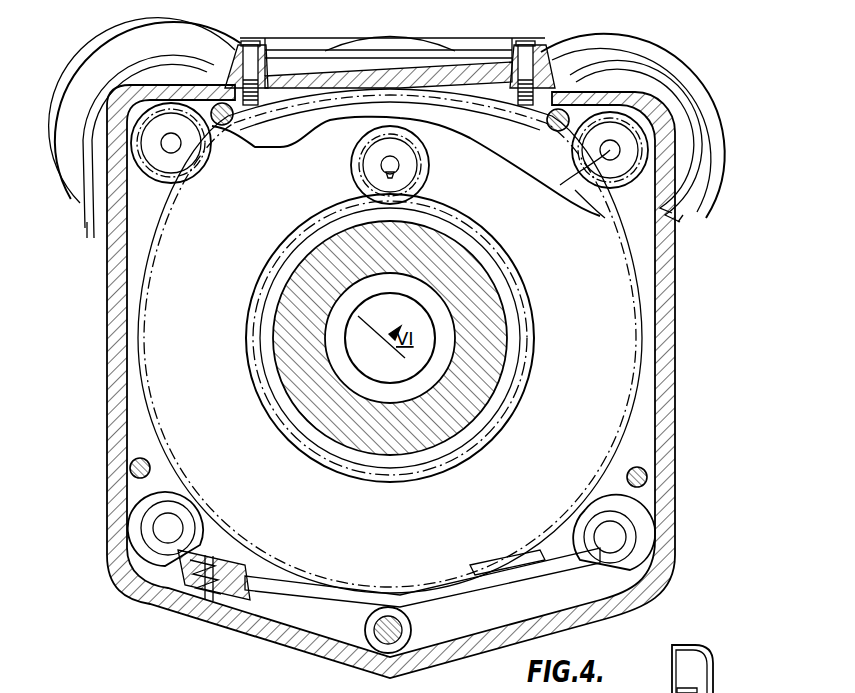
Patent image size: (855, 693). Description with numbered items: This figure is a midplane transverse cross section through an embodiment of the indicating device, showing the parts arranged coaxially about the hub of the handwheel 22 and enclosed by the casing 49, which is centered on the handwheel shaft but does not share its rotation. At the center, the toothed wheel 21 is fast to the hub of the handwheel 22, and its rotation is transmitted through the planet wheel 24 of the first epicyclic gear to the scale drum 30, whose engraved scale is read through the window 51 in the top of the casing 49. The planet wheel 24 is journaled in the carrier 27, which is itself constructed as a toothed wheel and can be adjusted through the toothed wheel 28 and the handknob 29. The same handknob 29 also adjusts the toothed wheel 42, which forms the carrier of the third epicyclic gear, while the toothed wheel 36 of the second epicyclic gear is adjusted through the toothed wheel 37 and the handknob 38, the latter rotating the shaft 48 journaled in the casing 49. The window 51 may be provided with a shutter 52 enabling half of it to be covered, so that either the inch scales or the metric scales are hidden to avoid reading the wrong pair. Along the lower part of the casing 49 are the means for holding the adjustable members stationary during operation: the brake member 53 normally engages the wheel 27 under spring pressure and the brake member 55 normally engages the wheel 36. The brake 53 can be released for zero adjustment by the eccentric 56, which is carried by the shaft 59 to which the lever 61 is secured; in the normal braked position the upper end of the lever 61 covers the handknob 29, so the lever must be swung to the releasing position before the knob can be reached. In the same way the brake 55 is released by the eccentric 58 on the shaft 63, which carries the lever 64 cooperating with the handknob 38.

The toothed wheel 21 is at (503, 283).
The handwheel 22 is at (487, 317).
The planet wheel 24 is at (381, 166).
The carrier 27 is at (165, 217).
The toothed wheel 28 is at (192, 180).
The handknob 29 is at (88, 225).
The scale drum 30 is at (493, 131).
The toothed wheel 36 is at (598, 198).
The toothed wheel 37 is at (622, 170).
The handknob 38 is at (680, 223).
The toothed wheel 42 is at (179, 144).
The shaft 48 is at (610, 150).
The casing 49 is at (133, 590).
The window 51 is at (473, 78).
The shutter 52 is at (425, 47).
The brake member 53 is at (273, 602).
The brake member 55 is at (480, 613).
The eccentric 56 is at (145, 517).
The eccentric 58 is at (630, 517).
The shaft 59 is at (163, 530).
The lever 61 is at (75, 196).
The shaft 63 is at (613, 537).
The lever 64 is at (712, 96).